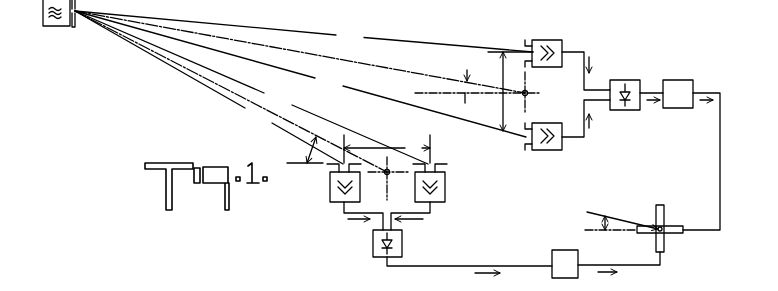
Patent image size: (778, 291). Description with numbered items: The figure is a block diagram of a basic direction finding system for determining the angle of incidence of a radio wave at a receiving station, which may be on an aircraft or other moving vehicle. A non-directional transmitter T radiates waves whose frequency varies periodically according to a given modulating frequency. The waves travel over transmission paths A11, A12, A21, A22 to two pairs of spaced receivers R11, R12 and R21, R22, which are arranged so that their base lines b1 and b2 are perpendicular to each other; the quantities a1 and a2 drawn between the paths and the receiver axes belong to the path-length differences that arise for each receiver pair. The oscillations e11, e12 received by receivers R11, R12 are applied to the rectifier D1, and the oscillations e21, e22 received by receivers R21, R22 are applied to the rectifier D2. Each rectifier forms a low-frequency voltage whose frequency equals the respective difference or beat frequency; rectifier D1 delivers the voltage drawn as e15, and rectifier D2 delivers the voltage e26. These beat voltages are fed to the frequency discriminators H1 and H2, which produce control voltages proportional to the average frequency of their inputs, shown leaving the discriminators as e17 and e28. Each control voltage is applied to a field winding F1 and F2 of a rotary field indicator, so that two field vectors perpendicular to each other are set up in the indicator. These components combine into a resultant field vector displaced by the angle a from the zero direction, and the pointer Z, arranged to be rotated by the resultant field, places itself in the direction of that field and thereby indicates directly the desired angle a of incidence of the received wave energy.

The transmitter T is at (60, 26).
The beam to receiver R21 A21 is at (304, 31).
The beam to receiver R22 A22 is at (300, 74).
The beam to receiver R12 A12 is at (251, 87).
The beam to receiver R11 A11 is at (209, 87).
The receiver R21 is at (562, 44).
The receiver R22 is at (556, 150).
The receiver R11 is at (330, 188).
The receiver R12 is at (445, 190).
The rectifier D1 is at (373, 248).
The rectifier D2 is at (624, 80).
The frequency discriminator H1 is at (577, 241).
The frequency discriminator H2 is at (680, 80).
The field winding F1 is at (666, 243).
The field winding F2 is at (677, 226).
The pointer Z is at (620, 218).
The angle of incidence a is at (597, 223).
The beam offset a1 is at (305, 150).
The beam offset a2 is at (456, 86).
The base line b1 is at (387, 149).
The base line b2 is at (510, 91).
The received oscillation e11 is at (363, 218).
The received oscillation e12 is at (410, 218).
The difference signal e15 is at (469, 269).
The amplified signal e17 is at (619, 266).
The received oscillation e21 is at (588, 71).
The received oscillation e22 is at (588, 118).
The low frequency voltage e26 is at (652, 104).
The amplified signal e28 is at (701, 161).